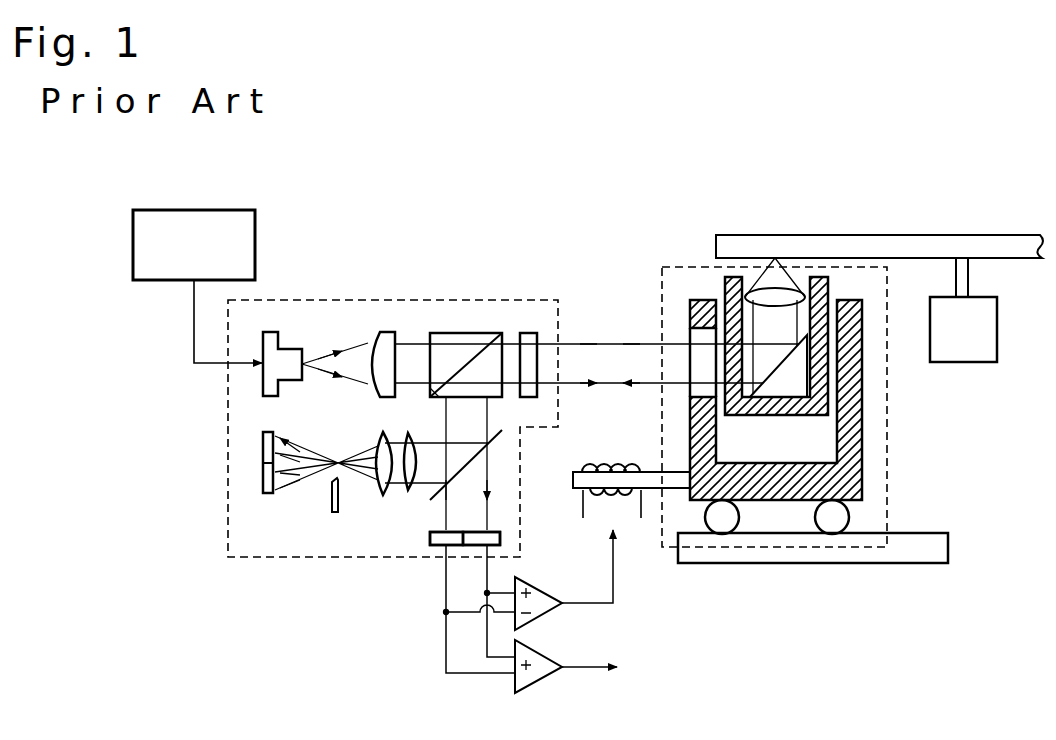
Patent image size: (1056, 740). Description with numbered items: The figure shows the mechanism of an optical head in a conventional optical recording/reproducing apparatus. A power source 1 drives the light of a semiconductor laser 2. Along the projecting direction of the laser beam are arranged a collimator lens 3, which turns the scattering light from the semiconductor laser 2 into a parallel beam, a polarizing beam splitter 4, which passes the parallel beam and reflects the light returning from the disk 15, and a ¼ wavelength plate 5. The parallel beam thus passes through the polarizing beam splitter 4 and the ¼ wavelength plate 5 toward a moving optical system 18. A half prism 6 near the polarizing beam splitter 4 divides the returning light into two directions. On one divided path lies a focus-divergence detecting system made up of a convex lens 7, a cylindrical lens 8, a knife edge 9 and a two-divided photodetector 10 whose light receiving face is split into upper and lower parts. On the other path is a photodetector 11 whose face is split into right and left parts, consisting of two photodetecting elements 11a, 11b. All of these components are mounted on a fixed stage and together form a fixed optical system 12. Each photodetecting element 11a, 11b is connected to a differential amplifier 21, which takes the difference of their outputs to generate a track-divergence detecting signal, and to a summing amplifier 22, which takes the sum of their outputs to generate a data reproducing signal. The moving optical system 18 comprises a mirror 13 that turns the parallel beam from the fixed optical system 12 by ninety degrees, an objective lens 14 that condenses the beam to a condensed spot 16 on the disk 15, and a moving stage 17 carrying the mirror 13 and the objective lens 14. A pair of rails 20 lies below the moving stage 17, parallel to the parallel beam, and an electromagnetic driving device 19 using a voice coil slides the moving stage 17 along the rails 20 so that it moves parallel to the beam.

The power source 1 is at (205, 210).
The semiconductor laser 2 is at (262, 380).
The collimator lens 3 is at (385, 332).
The polarizing beam splitter 4 is at (458, 333).
The ¼ wavelength plate 5 is at (527, 333).
The half prism 6 is at (510, 436).
The convex lens 7 is at (405, 491).
The cylindrical lens 8 is at (380, 494).
The knife edge 9 is at (332, 508).
The two-divided photodetector 10 is at (268, 495).
The photodetector 11 is at (492, 623).
The photodetecting element 11a is at (500, 538).
The photodetecting element 11b is at (443, 546).
The fixed optical system 12 is at (555, 298).
The mirror 13 is at (800, 366).
The objective lens 14 is at (806, 297).
The disk 15 is at (906, 234).
The condensed spot 16 is at (778, 258).
The moving stage 17 is at (860, 446).
The moving optical system 18 is at (690, 265).
The electromagnetic driving device 19 is at (632, 518).
The rails 20 is at (910, 534).
The differential amplifier 21 is at (540, 617).
The summing amplifier 22 is at (540, 683).